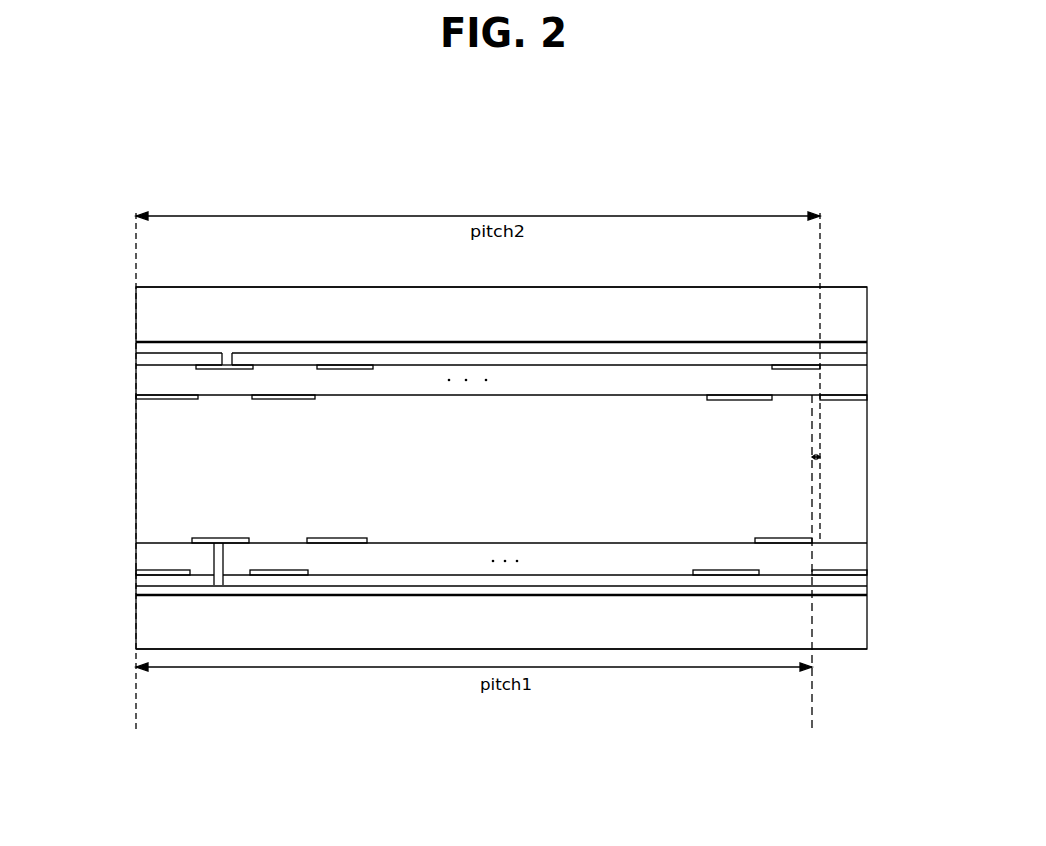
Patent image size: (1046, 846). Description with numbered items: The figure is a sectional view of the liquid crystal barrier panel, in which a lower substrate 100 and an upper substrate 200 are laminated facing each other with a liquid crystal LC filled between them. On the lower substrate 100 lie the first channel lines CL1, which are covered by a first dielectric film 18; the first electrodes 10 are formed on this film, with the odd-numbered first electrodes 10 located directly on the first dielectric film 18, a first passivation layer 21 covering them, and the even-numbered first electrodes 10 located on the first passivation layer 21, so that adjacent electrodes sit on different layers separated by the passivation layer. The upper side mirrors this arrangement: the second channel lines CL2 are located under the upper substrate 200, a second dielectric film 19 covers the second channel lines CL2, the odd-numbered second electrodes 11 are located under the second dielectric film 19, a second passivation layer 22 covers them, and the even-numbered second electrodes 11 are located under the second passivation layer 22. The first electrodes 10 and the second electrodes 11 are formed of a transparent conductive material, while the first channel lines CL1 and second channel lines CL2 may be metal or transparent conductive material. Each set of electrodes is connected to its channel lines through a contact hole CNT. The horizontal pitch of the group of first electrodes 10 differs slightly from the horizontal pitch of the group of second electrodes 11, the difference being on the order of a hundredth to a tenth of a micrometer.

The upper substrate 200 is at (160, 308).
The second passivation layer 22 is at (153, 386).
The second electrodes 11 is at (190, 397).
The second dielectric film 19 is at (858, 358).
The first passivation layer 21 is at (150, 554).
The first electrodes 10 is at (165, 574).
The first dielectric film 18 is at (856, 582).
The lower substrate 100 is at (175, 620).
The first channel lines CL1 is at (860, 590).
The second channel lines CL2 is at (860, 345).
The contact hole CNT is at (227, 357).
The liquid crystal LC is at (513, 462).